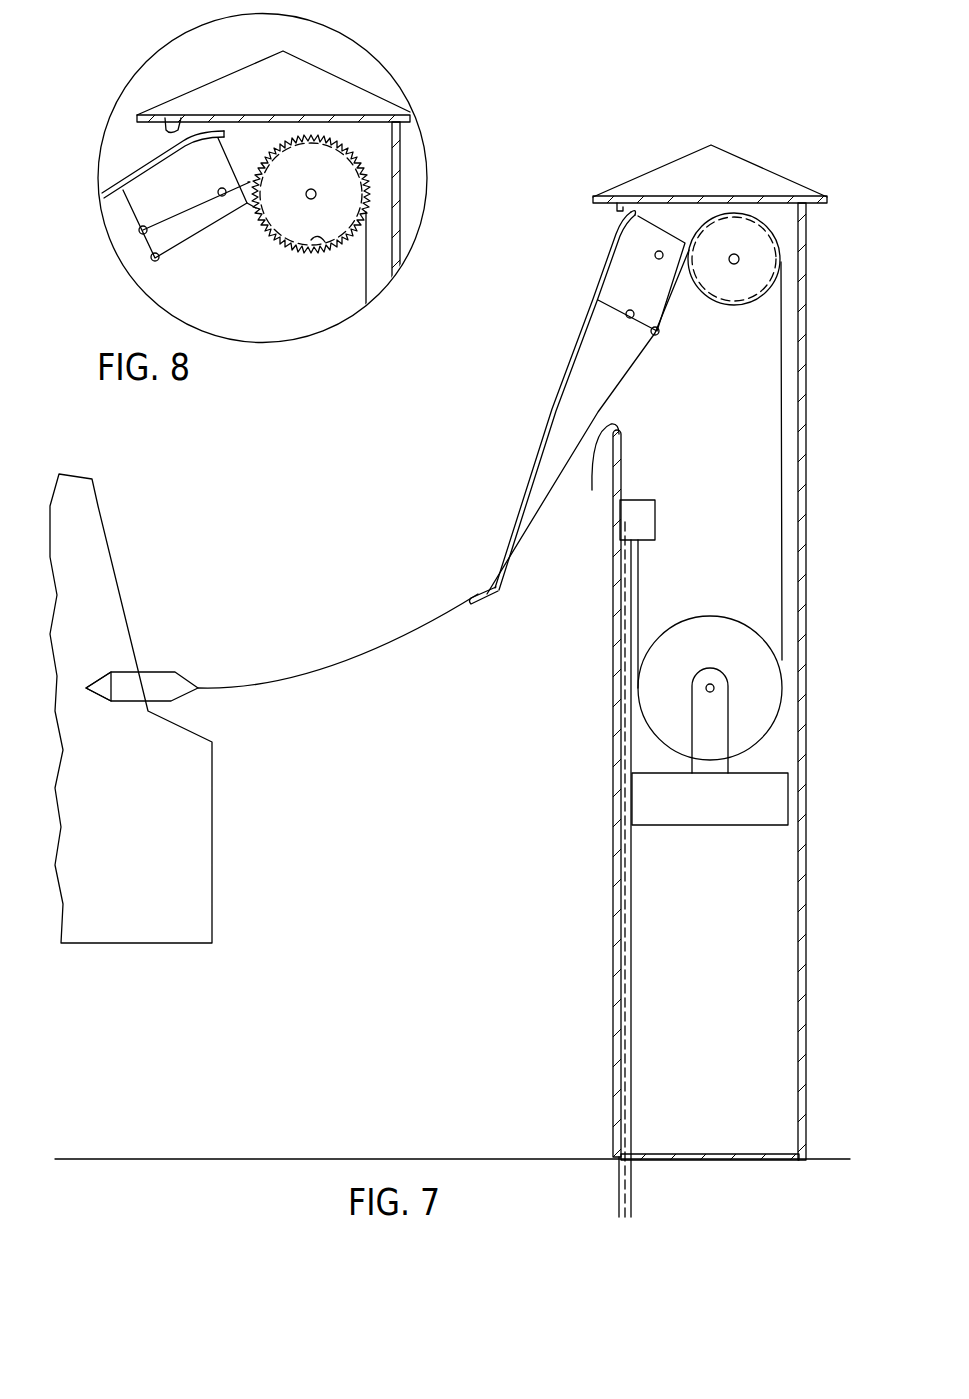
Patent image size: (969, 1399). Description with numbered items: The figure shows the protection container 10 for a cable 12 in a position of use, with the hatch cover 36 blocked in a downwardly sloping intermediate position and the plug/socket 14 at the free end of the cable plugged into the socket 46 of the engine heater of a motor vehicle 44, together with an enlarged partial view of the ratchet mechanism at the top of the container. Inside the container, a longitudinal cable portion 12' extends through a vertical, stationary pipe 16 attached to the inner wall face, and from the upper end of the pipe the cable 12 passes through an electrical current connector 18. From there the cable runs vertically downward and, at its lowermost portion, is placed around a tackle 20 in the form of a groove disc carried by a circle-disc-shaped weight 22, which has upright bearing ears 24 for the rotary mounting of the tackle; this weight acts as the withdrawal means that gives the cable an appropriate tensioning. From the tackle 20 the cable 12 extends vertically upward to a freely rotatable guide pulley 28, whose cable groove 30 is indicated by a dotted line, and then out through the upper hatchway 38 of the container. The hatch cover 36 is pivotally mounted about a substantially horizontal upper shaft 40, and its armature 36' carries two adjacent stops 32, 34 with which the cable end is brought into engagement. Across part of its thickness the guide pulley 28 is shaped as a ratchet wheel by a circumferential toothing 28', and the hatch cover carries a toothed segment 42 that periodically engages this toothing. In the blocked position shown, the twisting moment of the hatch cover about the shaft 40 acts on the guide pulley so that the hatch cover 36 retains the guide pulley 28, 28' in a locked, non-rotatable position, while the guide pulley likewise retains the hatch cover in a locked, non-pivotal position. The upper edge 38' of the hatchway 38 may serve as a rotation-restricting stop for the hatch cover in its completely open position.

In FIG. 7, the protection container 10 is at (803, 1133).
In FIG. 8, the protection container 10 is at (399, 190).
In FIG. 7, the cable 12 is at (490, 743).
In FIG. 8, the cable 12 is at (375, 289).
In FIG. 7, the longitudinal cable portion 12' is at (593, 869).
In FIG. 7, the plug/socket 14 is at (165, 680).
In FIG. 7, the vertical stationary pipe 16 is at (626, 760).
In FIG. 7, the electrical current connector 18 is at (648, 519).
In FIG. 7, the tackle 20 is at (667, 688).
In FIG. 7, the weight 22 is at (647, 801).
In FIG. 7, the bearing ears 24 is at (705, 733).
In FIG. 7, the guide pulley 28 is at (734, 288).
In FIG. 8, the guide pulley 28 is at (311, 164).
In FIG. 8, the toothing 28' is at (311, 224).
In FIG. 8, the groove 30 is at (320, 246).
In FIG. 7, the stop 32 is at (657, 335).
In FIG. 8, the stop 32 is at (151, 261).
In FIG. 7, the stop 34 is at (627, 315).
In FIG. 8, the stop 34 is at (139, 230).
In FIG. 8, the hatch cover 36 is at (138, 164).
In FIG. 7, the armature 36' is at (641, 230).
In FIG. 8, the armature 36' is at (186, 212).
In FIG. 7, the hatchway 38 is at (599, 471).
In FIG. 8, the upper edge of the hatchway 38' is at (180, 91).
In FIG. 7, the upper shaft 40 is at (659, 250).
In FIG. 8, the upper shaft 40 is at (221, 189).
In FIG. 8, the toothed segment 42 is at (258, 216).
In FIG. 7, the motor vehicle 44 is at (256, 834).
In FIG. 7, the socket 46 is at (121, 692).